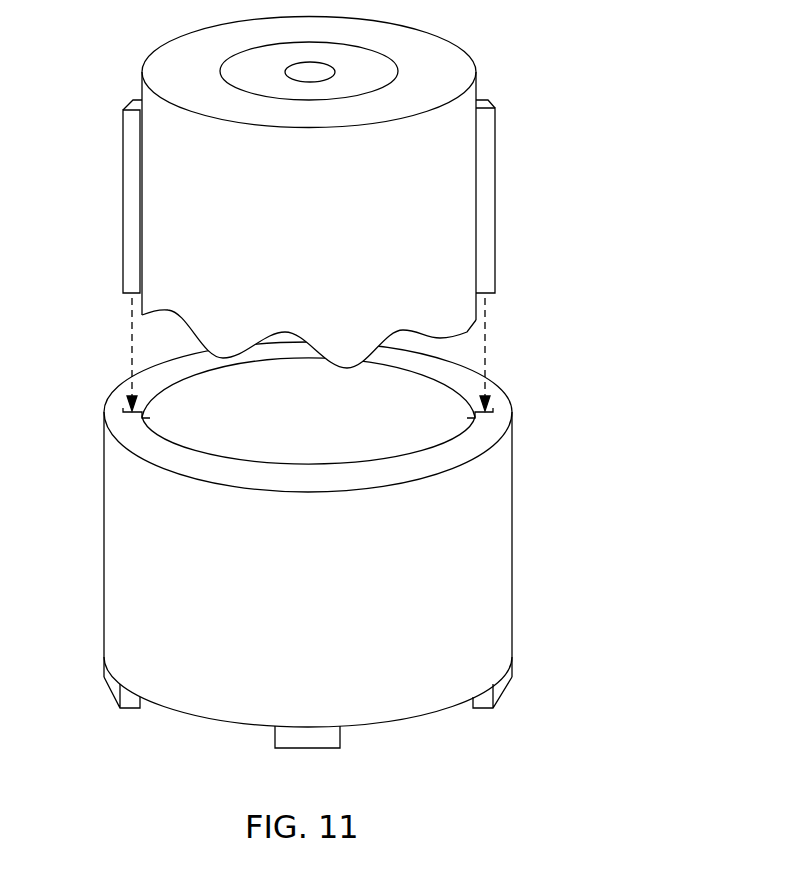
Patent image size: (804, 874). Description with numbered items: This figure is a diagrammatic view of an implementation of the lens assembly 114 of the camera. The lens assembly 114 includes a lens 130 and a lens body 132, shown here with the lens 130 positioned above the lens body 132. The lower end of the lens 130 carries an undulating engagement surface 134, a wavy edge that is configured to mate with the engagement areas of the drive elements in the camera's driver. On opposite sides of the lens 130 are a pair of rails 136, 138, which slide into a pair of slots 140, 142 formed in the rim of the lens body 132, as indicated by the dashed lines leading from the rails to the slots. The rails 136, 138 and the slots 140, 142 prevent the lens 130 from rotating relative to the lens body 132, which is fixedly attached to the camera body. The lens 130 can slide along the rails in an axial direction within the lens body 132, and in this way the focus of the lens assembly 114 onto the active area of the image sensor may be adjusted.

The lens assembly 114 is at (647, 208).
The lens 130 is at (476, 90).
The lens body 132 is at (513, 547).
The undulating engagement surface 134 is at (311, 354).
The rail 136 is at (122, 172).
The rail 138 is at (496, 172).
The slot 140 is at (123, 412).
The slot 142 is at (490, 414).